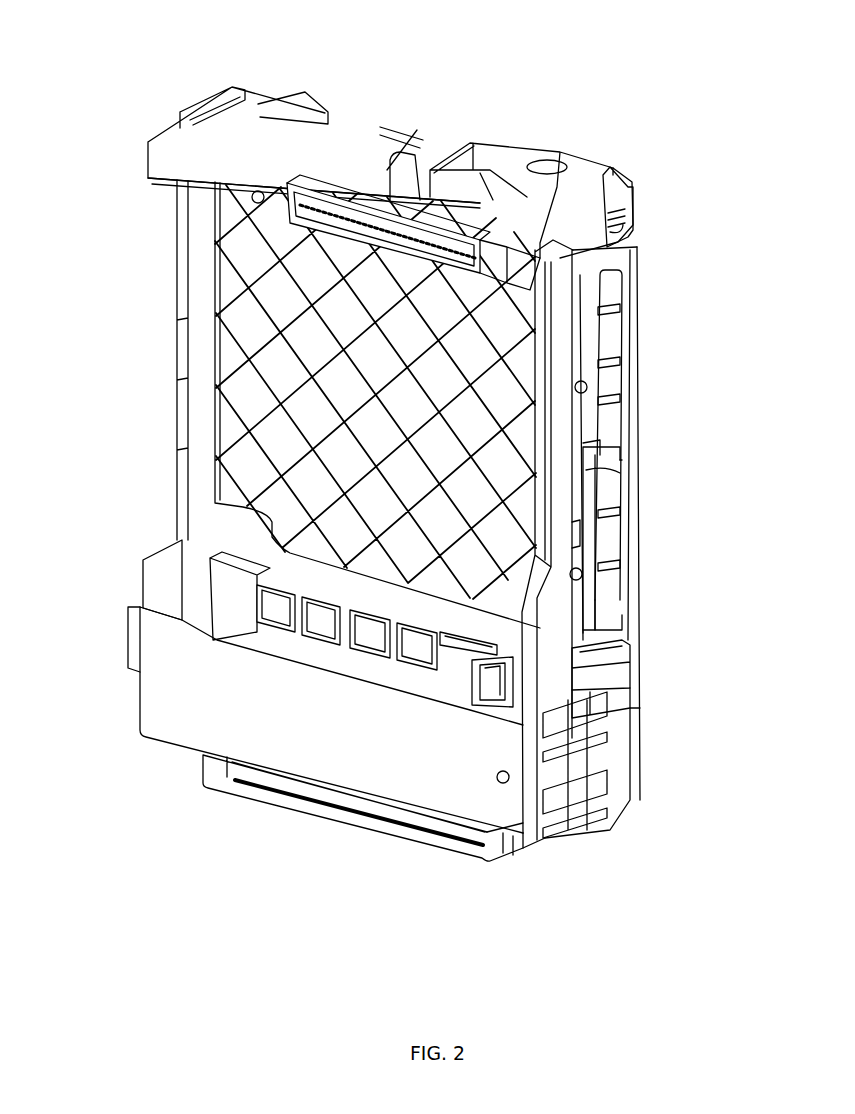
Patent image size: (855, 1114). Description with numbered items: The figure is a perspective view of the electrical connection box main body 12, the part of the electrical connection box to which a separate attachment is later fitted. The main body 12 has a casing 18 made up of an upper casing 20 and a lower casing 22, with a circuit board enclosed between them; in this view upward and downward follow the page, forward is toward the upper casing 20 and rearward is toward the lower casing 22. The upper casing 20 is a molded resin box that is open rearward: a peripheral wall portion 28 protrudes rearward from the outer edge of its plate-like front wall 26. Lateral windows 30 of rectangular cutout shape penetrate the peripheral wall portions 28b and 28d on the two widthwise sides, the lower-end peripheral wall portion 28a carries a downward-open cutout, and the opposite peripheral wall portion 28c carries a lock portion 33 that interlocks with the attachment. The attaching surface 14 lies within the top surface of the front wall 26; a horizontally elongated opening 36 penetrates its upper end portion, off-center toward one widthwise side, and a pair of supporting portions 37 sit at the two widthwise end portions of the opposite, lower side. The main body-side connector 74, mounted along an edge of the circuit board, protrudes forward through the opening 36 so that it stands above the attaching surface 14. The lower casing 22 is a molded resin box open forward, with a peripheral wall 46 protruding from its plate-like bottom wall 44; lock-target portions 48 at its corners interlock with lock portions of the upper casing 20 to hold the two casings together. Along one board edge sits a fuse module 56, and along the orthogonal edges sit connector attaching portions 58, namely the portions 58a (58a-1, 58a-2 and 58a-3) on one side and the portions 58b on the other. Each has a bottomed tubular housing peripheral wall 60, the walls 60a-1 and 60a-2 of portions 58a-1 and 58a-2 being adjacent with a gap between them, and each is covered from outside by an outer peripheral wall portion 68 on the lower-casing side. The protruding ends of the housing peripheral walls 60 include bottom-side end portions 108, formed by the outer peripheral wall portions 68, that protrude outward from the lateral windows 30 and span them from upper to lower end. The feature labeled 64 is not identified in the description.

The electrical connection box main body 12 is at (425, 38).
The attaching surface 14 is at (459, 511).
The front wall 26 is at (500, 330).
The casing 18 is at (716, 130).
The upper casing 20 is at (630, 172).
The lower casing 22 is at (650, 362).
The peripheral wall portion 28 is at (437, 720).
The peripheral wall portion on the lower end side 28a is at (310, 778).
The peripheral wall portion 28b is at (597, 752).
The peripheral wall portion 28c is at (350, 138).
The peripheral wall portion 28d is at (135, 707).
The lateral window 30 is at (573, 287).
The lock portion 33 is at (450, 130).
The opening 36 is at (503, 268).
The supporting portion 37 is at (168, 568).
The bottom wall 44 is at (600, 642).
The peripheral wall 46 is at (617, 710).
The lock-target portion 48 is at (623, 232).
The fuse module 56 is at (401, 868).
The connector attaching portions 58 is at (143, 350).
The connector attaching portions 58a is at (670, 571).
The connector attaching portion 58a-1 is at (650, 383).
The connector attaching portion 58a-2 is at (627, 553).
The connector attaching portion 58a-3 is at (637, 671).
The connector attaching portions 58b is at (109, 360).
The housing peripheral wall 60 is at (600, 690).
The housing peripheral wall 60a-1 is at (593, 460).
The housing peripheral wall 60a-2 is at (603, 588).
The locking projection 64 is at (590, 470).
The outer peripheral wall portion 68 is at (600, 440).
The main body-side connector 74 is at (330, 187).
The bottom-side end portion 108 is at (647, 500).